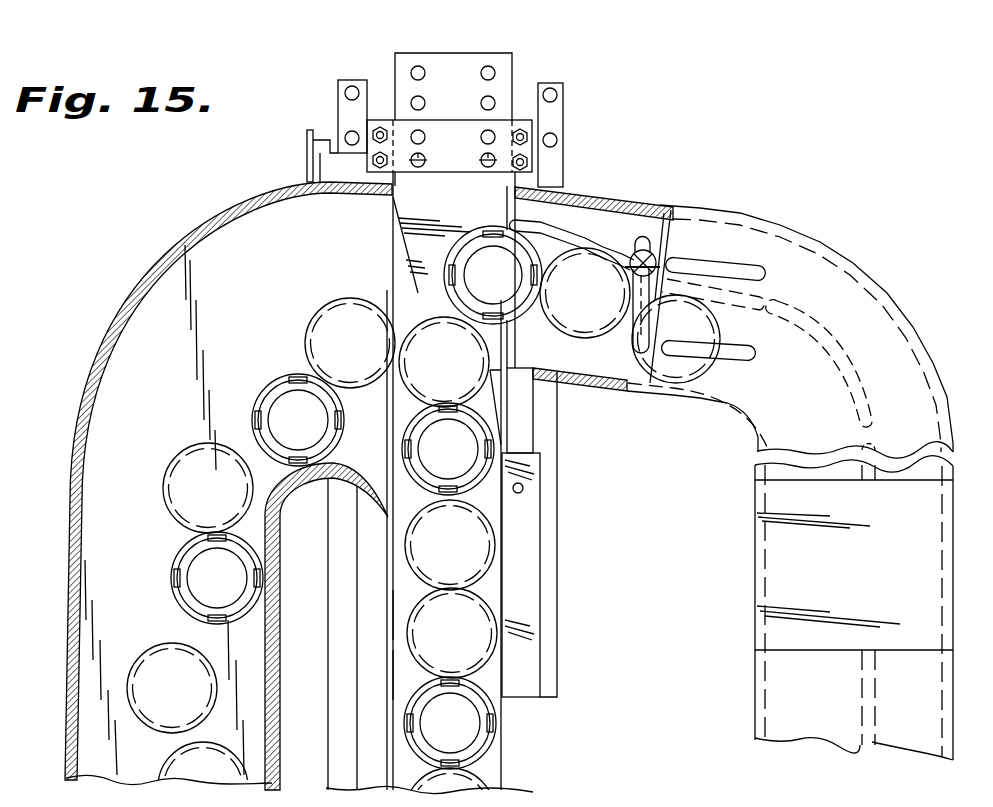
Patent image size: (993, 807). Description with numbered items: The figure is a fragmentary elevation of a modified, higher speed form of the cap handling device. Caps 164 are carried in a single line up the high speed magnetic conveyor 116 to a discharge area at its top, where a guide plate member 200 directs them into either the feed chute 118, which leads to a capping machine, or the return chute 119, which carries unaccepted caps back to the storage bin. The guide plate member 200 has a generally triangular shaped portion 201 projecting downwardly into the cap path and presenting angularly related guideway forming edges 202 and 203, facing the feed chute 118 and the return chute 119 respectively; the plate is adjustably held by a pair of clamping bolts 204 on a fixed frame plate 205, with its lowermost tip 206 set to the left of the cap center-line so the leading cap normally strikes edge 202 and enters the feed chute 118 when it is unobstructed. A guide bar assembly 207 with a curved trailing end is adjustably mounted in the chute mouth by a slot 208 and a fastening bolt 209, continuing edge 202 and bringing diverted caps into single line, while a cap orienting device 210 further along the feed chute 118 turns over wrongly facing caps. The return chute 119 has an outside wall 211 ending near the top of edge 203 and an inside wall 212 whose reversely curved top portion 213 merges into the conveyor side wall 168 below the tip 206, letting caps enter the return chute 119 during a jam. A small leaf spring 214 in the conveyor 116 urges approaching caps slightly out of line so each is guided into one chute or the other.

The high speed magnetic conveyor 116 is at (397, 667).
The feed chute 118 is at (598, 212).
The return chute 119 is at (132, 278).
The caps 164 is at (591, 357).
The side wall of the conveyor 168 is at (392, 594).
The guide plate member 200 is at (478, 211).
The generally triangular shaped portion 201 is at (418, 273).
The guideway forming edge 202 is at (418, 293).
The guideway forming edge 203 is at (400, 249).
The clamping bolts 204 is at (488, 158).
The fixed frame plate 205 is at (445, 128).
The lowermost tip 206 is at (418, 292).
The guide bar assembly 207 is at (518, 230).
The slot 208 is at (642, 242).
The fastening bolt 209 is at (666, 248).
The cap orienting device 210 is at (778, 558).
The outside wall 211 is at (183, 240).
The inside wall 212 is at (276, 607).
The reversely curved top portion 213 is at (330, 476).
The leaf spring 214 is at (486, 394).